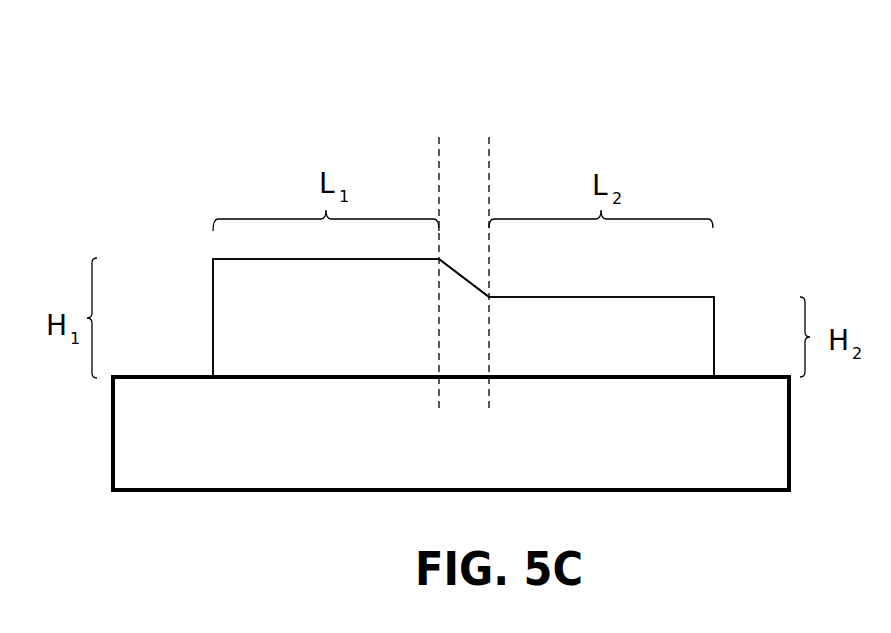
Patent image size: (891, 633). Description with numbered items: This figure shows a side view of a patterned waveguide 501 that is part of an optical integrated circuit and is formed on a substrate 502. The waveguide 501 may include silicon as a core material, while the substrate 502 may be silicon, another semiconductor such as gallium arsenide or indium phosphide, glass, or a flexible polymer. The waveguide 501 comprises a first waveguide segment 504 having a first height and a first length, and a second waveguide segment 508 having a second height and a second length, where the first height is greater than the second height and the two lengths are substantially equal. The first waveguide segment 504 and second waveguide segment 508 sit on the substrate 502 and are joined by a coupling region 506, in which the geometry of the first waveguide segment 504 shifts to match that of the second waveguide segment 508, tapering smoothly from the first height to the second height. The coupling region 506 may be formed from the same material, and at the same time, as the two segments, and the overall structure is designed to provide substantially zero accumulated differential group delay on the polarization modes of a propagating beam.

The waveguide 501 is at (213, 250).
The substrate 502 is at (456, 457).
The first waveguide segment 504 is at (302, 334).
The coupling region 506 is at (463, 152).
The second waveguide segment 508 is at (577, 356).